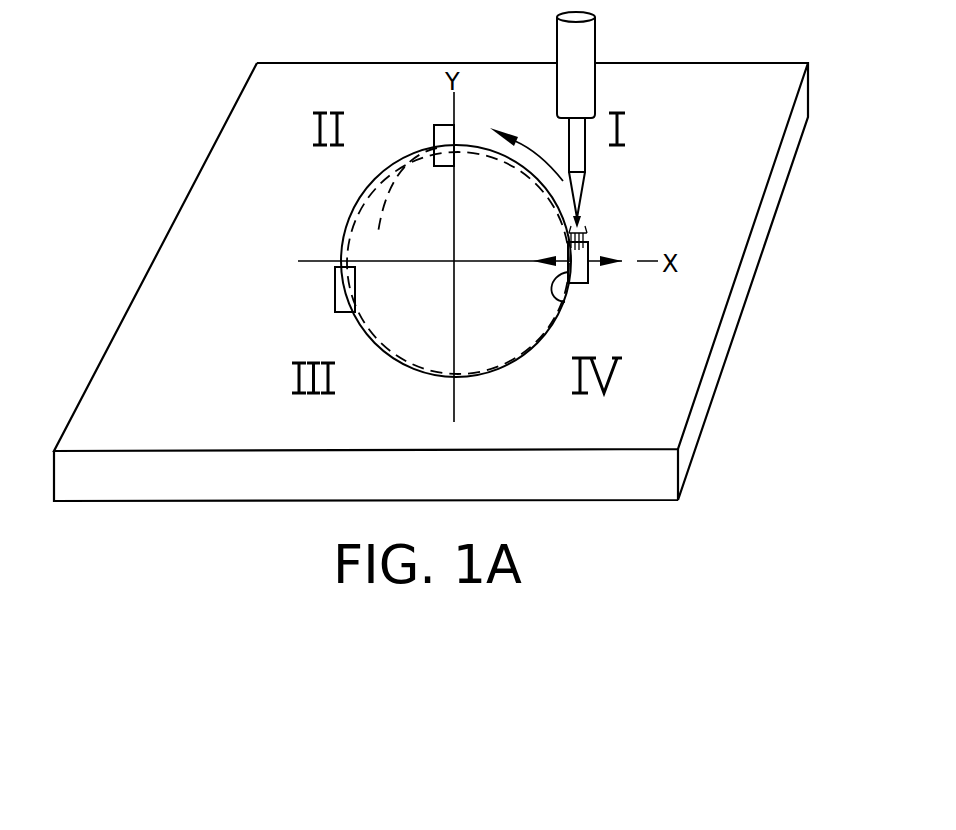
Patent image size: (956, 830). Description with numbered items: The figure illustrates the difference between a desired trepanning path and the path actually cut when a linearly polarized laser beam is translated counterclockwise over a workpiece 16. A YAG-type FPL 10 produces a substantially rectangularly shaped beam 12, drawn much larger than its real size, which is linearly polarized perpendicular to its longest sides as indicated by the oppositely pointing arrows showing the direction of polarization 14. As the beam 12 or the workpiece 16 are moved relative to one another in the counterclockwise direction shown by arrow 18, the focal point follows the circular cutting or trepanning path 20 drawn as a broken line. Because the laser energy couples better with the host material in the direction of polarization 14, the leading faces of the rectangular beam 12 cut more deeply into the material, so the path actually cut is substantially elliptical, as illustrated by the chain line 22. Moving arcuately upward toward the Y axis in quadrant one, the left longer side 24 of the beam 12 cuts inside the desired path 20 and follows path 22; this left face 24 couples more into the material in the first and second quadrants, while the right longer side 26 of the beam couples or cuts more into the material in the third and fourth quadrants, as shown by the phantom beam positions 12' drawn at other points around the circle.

The YAG-type FPL 10 is at (597, 50).
The rectangularly shaped beam 12 is at (623, 231).
The phantom beam positions 12' is at (344, 190).
The direction of polarization 14 is at (590, 262).
The workpiece 16 is at (762, 233).
The arrow 18 is at (540, 153).
The circular path 20 is at (372, 341).
The chain line 22 is at (347, 207).
The left longer side 24 is at (378, 233).
The right longer side 26 is at (590, 250).